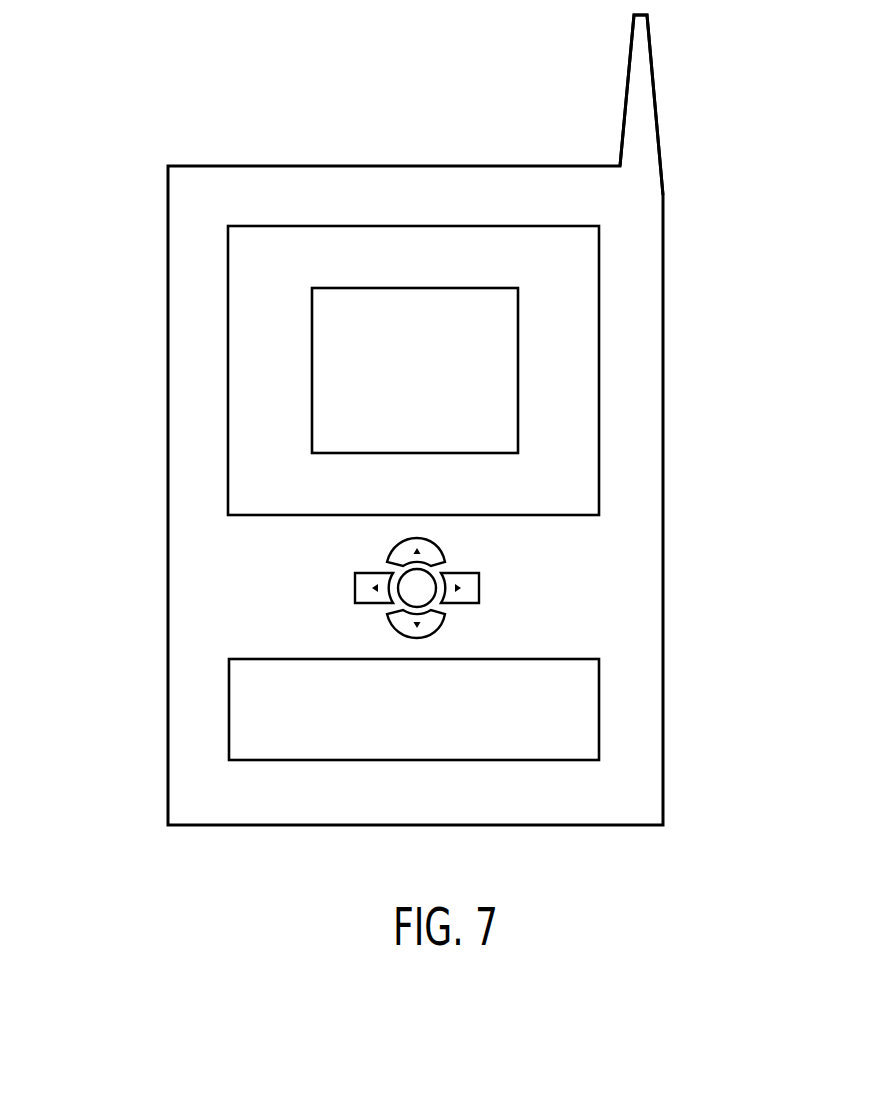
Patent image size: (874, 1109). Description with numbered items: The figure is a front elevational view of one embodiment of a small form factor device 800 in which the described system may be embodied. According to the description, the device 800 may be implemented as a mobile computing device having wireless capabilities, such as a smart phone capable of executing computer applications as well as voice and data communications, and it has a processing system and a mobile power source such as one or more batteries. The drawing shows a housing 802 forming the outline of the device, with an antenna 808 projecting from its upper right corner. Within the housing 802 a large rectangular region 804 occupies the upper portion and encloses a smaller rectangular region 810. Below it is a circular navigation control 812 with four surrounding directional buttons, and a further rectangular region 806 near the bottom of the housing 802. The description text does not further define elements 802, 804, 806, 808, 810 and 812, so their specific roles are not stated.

The small form factor device 800 is at (168, 112).
The housing 802 is at (168, 580).
The display 804 is at (599, 278).
The input area 806 is at (599, 710).
The antenna 808 is at (627, 92).
The display window 810 is at (415, 288).
The navigation control 812 is at (512, 589).